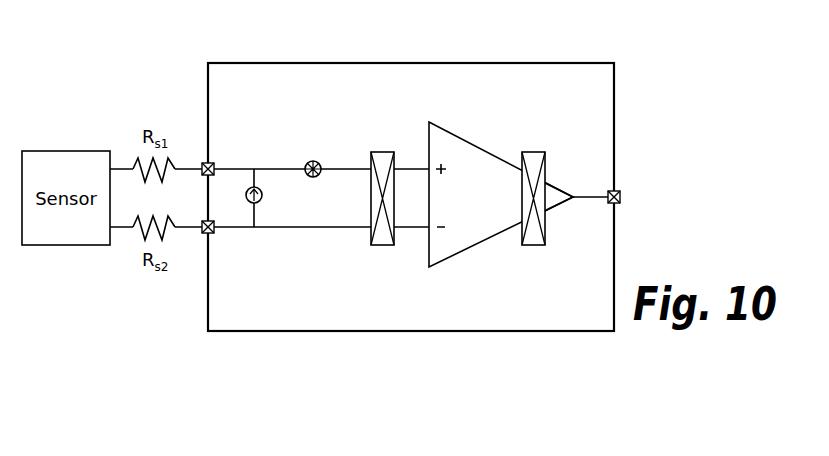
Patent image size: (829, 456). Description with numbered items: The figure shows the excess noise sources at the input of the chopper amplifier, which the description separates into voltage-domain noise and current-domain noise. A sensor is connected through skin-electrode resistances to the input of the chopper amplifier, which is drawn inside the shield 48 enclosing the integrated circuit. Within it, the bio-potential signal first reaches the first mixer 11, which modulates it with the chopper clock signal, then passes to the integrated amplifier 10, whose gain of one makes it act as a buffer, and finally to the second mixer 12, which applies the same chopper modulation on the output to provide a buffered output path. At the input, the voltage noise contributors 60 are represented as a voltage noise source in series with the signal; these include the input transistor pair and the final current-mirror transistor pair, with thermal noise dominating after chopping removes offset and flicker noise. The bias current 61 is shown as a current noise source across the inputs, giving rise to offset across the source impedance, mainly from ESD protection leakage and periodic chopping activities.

The integrated amplifier 10 is at (422, 258).
The first mixer 11 is at (360, 245).
The second mixer 12 is at (533, 257).
The shield 48 is at (620, 138).
The voltage noise contributors 60 is at (296, 157).
The bias current 61 is at (233, 188).